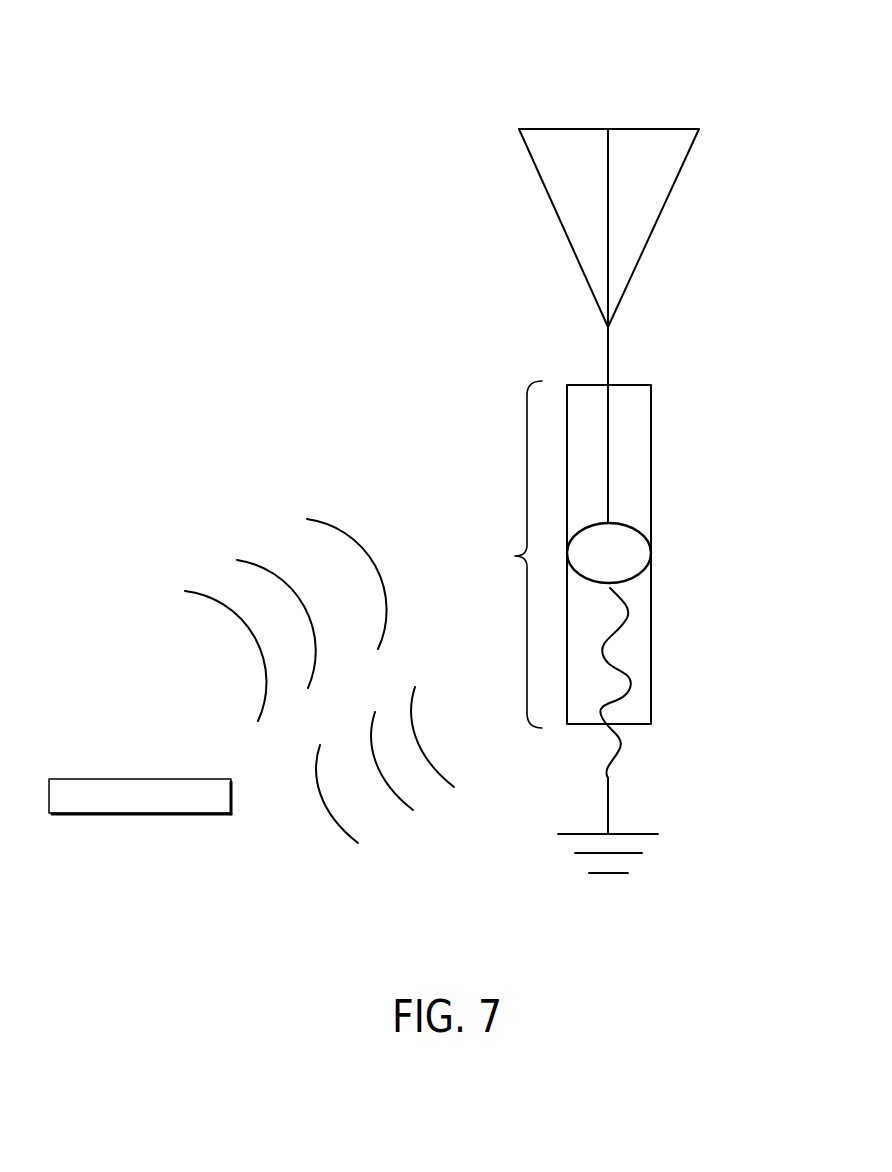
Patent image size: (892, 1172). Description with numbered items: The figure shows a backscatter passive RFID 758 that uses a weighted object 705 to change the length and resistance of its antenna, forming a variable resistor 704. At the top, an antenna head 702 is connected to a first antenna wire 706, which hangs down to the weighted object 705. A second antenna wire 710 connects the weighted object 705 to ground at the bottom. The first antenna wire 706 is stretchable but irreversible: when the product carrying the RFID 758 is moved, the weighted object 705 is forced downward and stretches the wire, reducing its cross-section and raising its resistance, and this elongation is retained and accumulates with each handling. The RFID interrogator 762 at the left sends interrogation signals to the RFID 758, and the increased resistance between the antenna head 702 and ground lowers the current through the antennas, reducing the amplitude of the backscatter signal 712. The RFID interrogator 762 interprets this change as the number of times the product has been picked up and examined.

The antenna head 702 is at (724, 108).
The variable resistor 704 is at (613, 579).
The weighted object 705 is at (658, 553).
The first antenna wire 706 is at (621, 349).
The second antenna wire 710 is at (629, 771).
The backscatter signal 712 is at (419, 840).
The RFID 758 is at (518, 335).
The RFID interrogator 762 is at (140, 778).